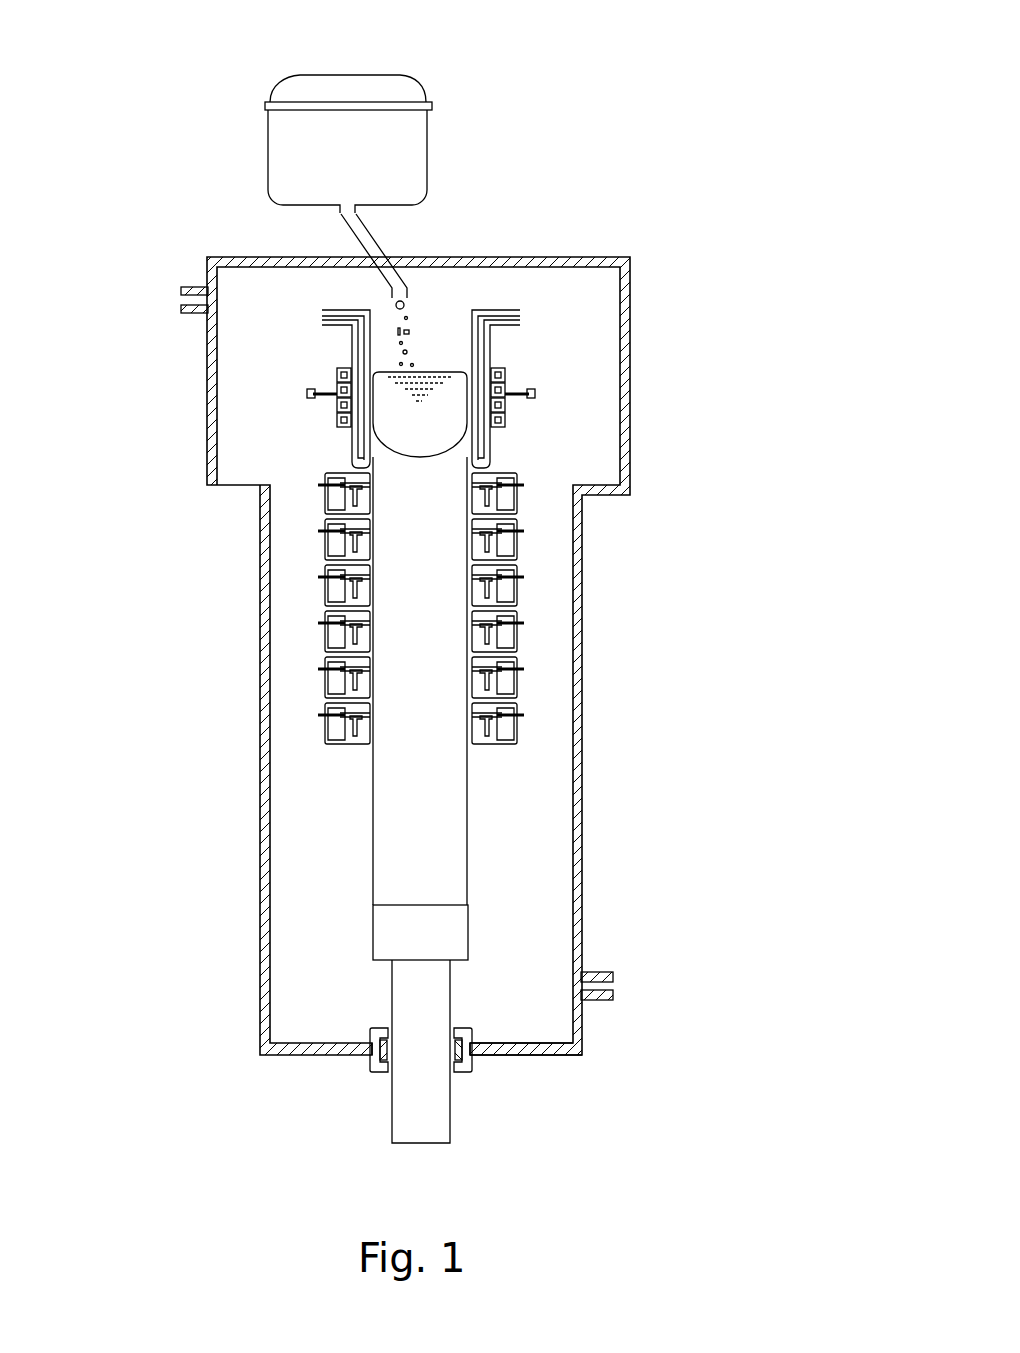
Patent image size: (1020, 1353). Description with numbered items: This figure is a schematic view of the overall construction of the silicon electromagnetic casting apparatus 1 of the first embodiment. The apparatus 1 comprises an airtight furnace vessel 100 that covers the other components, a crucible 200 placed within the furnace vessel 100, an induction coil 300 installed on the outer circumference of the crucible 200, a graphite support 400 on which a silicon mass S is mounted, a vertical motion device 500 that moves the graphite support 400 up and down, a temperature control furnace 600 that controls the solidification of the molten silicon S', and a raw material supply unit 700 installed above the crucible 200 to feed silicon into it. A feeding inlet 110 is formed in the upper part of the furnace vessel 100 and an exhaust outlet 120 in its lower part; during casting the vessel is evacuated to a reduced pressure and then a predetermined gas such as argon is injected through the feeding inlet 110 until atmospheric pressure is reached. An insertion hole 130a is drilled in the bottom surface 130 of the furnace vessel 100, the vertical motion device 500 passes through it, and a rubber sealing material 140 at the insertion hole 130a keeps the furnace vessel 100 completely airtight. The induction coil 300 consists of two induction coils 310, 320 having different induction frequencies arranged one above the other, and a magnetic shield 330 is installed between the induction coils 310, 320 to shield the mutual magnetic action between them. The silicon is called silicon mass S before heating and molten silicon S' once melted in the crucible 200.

The apparatus 1 is at (690, 125).
The furnace vessel 100 is at (630, 285).
The feeding inlet 110 is at (205, 280).
The exhaust outlet 120 is at (583, 975).
The bottom surface 130 is at (532, 1050).
The insertion hole 130a is at (440, 1073).
The sealing material 140 is at (378, 1045).
The crucible 200 is at (484, 312).
The induction coil 300 is at (720, 355).
The induction coil 310 is at (504, 373).
The induction coil 320 is at (504, 428).
The magnetic shield 330 is at (308, 395).
The graphite support 400 is at (382, 938).
The vertical motion device 500 is at (392, 1120).
The temperature control furnace 600 is at (506, 650).
The raw material supply unit 700 is at (405, 88).
The silicon mass S is at (312, 681).
The molten silicon S' is at (331, 470).